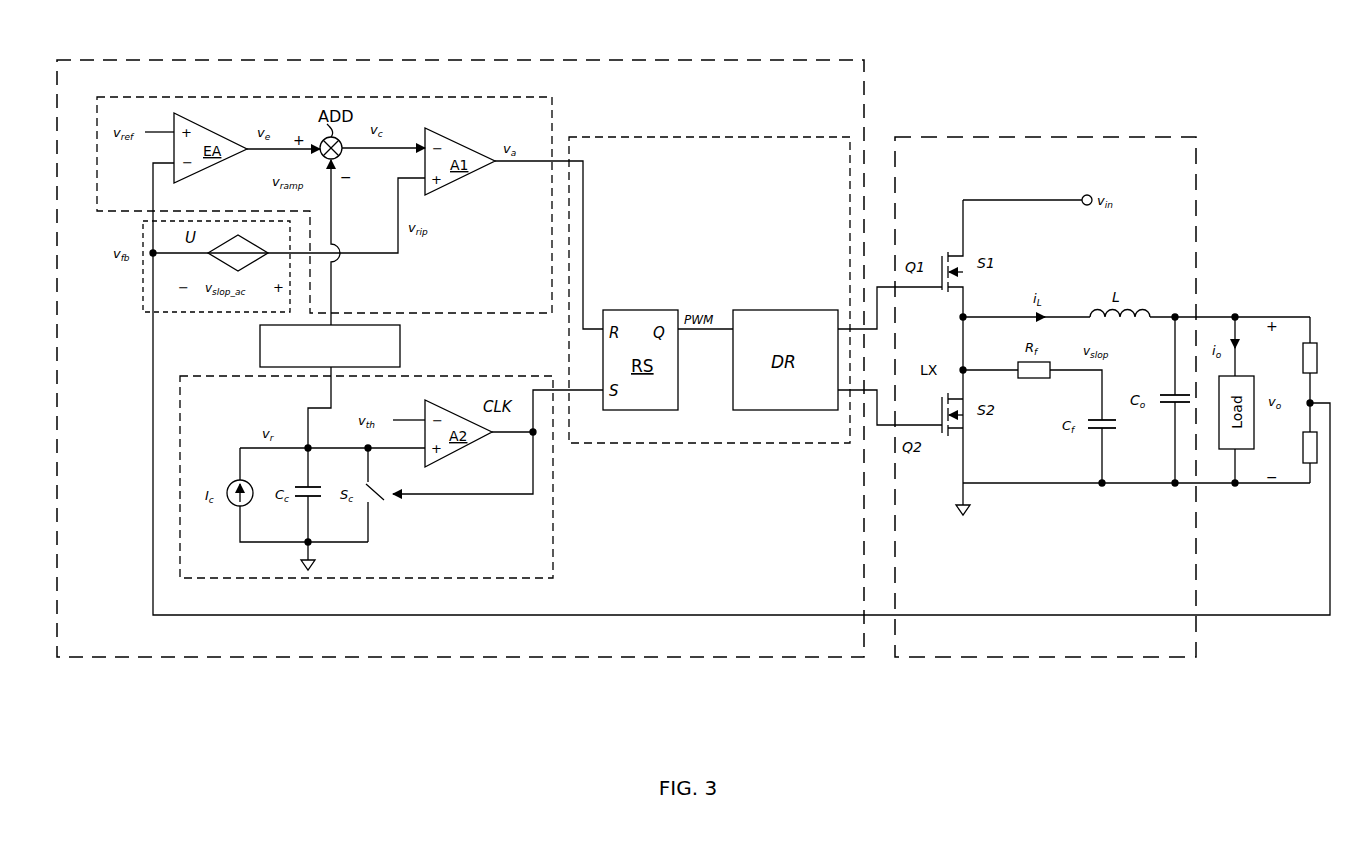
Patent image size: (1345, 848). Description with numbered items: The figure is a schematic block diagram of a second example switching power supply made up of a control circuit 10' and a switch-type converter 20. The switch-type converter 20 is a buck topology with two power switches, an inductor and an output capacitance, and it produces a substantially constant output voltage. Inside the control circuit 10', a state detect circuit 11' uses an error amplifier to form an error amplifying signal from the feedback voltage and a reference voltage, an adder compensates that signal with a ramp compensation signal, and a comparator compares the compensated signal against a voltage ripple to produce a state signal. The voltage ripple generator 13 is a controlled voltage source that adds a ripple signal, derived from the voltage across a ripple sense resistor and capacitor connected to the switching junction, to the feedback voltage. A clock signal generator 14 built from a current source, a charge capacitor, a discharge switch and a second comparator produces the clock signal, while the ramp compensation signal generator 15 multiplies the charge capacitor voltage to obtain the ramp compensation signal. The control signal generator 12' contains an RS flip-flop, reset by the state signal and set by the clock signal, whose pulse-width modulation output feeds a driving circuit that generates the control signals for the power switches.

The control circuit 10' is at (460, 329).
The state detect circuit 11' is at (324, 205).
The control signal generator 12' is at (709, 290).
The voltage ripple generator 13 is at (175, 313).
The clock signal generator 14 is at (366, 477).
The ramp compensation signal generator 15 is at (330, 346).
The switch-type converter 20 is at (1200, 214).